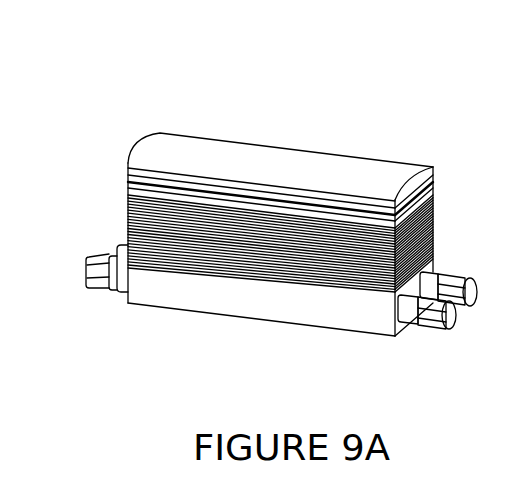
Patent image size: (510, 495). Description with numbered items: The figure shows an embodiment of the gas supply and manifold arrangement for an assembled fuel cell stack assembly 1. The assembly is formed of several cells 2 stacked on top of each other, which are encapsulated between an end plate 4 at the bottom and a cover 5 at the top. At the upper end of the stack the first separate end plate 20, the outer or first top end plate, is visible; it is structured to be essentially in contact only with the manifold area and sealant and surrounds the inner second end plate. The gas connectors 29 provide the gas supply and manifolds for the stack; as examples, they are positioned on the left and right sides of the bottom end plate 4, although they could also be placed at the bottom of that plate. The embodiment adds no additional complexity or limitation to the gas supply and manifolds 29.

The stack assembly 1 is at (117, 81).
The cells 2 is at (441, 223).
The bottom end plate 4 is at (180, 292).
The cover 5 is at (167, 150).
The first separate end plate 20 is at (423, 190).
The gas connectors 29 is at (92, 255).